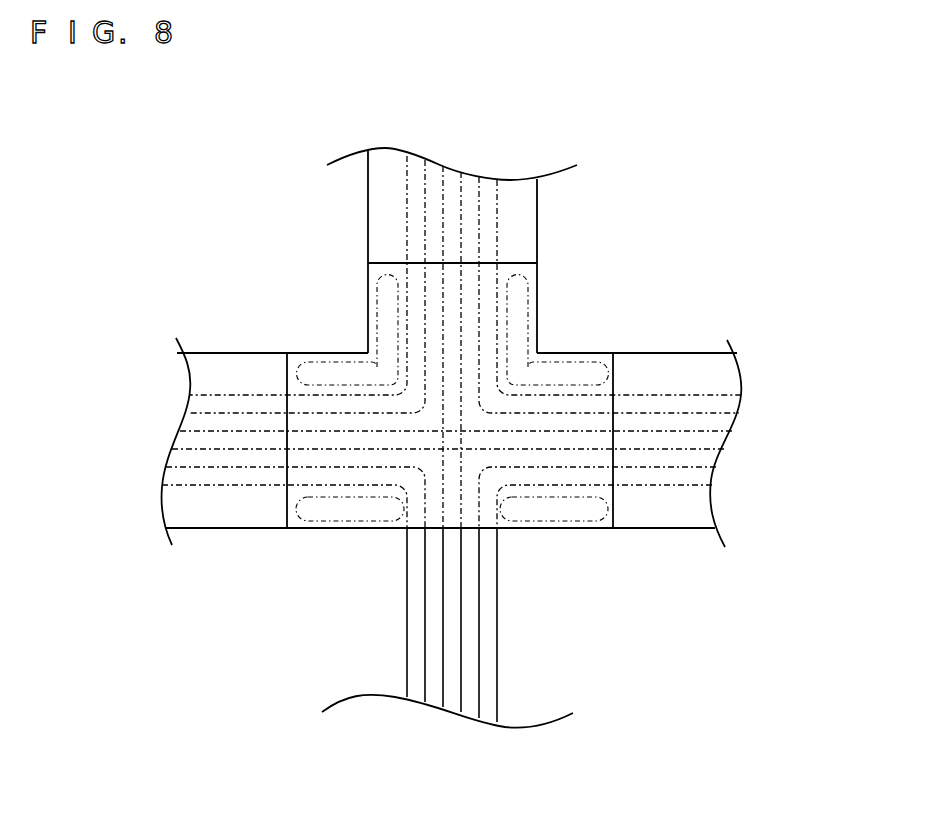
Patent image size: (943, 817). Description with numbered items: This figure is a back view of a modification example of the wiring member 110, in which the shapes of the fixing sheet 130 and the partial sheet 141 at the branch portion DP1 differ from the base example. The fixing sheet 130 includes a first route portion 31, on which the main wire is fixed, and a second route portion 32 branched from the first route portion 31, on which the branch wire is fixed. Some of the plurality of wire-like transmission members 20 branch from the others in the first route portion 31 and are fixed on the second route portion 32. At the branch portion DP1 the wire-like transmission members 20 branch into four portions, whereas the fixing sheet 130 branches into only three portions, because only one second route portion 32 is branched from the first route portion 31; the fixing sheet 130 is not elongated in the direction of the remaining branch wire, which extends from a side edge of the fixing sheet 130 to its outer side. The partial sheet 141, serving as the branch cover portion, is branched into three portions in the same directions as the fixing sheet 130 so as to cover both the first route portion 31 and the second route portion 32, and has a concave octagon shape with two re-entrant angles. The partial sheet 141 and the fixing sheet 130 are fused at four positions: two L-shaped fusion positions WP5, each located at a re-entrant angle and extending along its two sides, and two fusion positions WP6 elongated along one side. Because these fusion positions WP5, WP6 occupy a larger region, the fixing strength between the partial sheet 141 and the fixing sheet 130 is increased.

The wiring member 110 is at (215, 130).
The second route portion 32 is at (517, 218).
The first route portion 31 is at (228, 365).
The wire-like transmission members 20 is at (412, 698).
The fixing sheet 130 is at (205, 530).
The partial sheet 141 is at (288, 500).
The fusion position WP5 is at (377, 297).
The fusion position WP6 is at (357, 524).
The branch portion DP1 is at (482, 476).